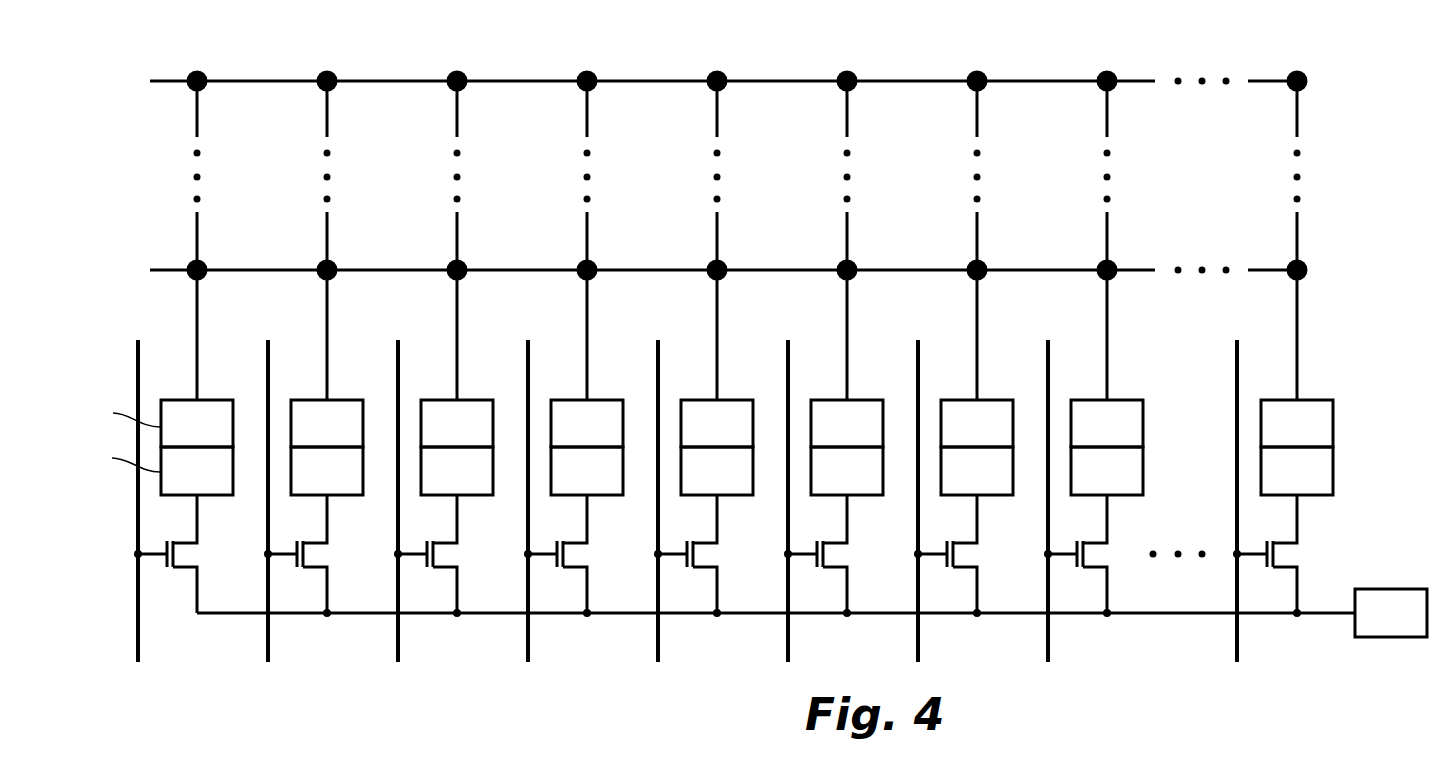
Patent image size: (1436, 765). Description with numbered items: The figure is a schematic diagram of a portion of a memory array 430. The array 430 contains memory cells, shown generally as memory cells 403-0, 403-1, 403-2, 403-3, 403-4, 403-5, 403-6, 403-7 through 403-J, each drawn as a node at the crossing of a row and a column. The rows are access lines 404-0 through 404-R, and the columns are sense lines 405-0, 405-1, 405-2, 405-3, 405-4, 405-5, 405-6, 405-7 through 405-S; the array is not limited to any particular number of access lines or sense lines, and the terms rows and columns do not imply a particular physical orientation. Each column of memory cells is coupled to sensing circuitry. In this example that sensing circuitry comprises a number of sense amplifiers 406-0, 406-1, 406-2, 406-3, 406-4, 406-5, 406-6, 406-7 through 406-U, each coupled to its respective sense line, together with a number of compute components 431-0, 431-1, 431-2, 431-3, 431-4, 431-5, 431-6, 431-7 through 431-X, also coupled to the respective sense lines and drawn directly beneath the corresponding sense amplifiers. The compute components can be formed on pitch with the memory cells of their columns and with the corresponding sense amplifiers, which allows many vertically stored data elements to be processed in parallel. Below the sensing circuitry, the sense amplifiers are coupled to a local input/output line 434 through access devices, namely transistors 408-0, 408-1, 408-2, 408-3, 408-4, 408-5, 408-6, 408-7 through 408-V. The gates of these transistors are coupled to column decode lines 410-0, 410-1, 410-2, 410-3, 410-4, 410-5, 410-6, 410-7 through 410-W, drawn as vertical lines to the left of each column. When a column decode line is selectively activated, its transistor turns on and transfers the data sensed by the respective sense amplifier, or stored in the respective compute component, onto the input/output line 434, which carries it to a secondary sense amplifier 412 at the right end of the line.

The memory array 430 is at (154, 26).
The memory cell 403-0 is at (198, 70).
The memory cell 403-1 is at (328, 70).
The memory cell 403-2 is at (458, 70).
The memory cell 403-3 is at (588, 70).
The memory cell 403-4 is at (718, 70).
The memory cell 403-5 is at (848, 70).
The memory cell 403-6 is at (978, 70).
The memory cell 403-7 is at (1108, 70).
The memory cell 403-J is at (1299, 259).
The access line 404-0 is at (250, 84).
The access line 404-R is at (252, 272).
The sense line 405-0 is at (198, 122).
The sense line 405-1 is at (328, 122).
The sense line 405-2 is at (458, 122).
The sense line 405-3 is at (588, 122).
The sense line 405-4 is at (718, 122).
The sense line 405-5 is at (848, 122).
The sense line 405-6 is at (978, 122).
The sense line 405-7 is at (1108, 122).
The sense line 405-S is at (1298, 122).
The sense amplifier 406-0 is at (197, 423).
The sense amplifier 406-1 is at (327, 423).
The sense amplifier 406-2 is at (457, 423).
The sense amplifier 406-3 is at (587, 423).
The sense amplifier 406-4 is at (717, 423).
The sense amplifier 406-5 is at (847, 423).
The sense amplifier 406-6 is at (977, 423).
The sense amplifier 406-7 is at (1107, 423).
The sense amplifier 406-U is at (1297, 423).
The compute component 431-0 is at (197, 471).
The compute component 431-1 is at (327, 471).
The compute component 431-2 is at (457, 471).
The compute component 431-3 is at (587, 471).
The compute component 431-4 is at (717, 471).
The compute component 431-5 is at (847, 471).
The compute component 431-6 is at (977, 471).
The compute component 431-7 is at (1107, 471).
The compute component 431-X is at (1297, 471).
The access device (transistor) 408-0 is at (190, 553).
The access device (transistor) 408-1 is at (320, 553).
The access device (transistor) 408-2 is at (450, 553).
The access device (transistor) 408-3 is at (580, 553).
The access device (transistor) 408-4 is at (710, 553).
The access device (transistor) 408-5 is at (840, 553).
The access device (transistor) 408-6 is at (970, 553).
The access device (transistor) 408-7 is at (1100, 553).
The access device (transistor) 408-V is at (1290, 553).
The column decode line 410-0 is at (139, 642).
The column decode line 410-1 is at (269, 642).
The column decode line 410-2 is at (399, 642).
The column decode line 410-3 is at (529, 642).
The column decode line 410-4 is at (659, 642).
The column decode line 410-5 is at (789, 642).
The column decode line 410-6 is at (919, 642).
The column decode line 410-7 is at (1049, 642).
The column decode line 410-W is at (1238, 642).
The input/output (I/O) line 434 is at (225, 612).
The secondary sense amplifier 412 is at (1383, 590).